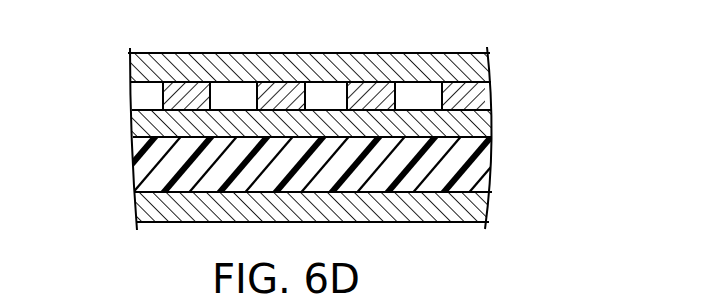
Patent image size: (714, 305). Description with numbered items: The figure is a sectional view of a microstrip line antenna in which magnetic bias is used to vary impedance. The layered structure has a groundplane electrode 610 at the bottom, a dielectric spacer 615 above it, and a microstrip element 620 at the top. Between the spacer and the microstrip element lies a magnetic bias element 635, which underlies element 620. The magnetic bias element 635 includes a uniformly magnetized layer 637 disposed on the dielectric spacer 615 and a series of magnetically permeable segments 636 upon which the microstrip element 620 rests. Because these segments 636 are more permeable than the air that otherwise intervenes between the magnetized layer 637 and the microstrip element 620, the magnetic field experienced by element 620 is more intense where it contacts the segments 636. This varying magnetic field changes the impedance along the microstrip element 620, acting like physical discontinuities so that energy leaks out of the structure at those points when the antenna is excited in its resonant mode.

The groundplane electrode 610 is at (490, 208).
The dielectric spacer 615 is at (131, 177).
The microstrip element 620 is at (275, 53).
The magnetic bias element 635 is at (120, 87).
The magnetically permeable segments 636 is at (180, 88).
The uniformly magnetized layer 637 is at (488, 120).